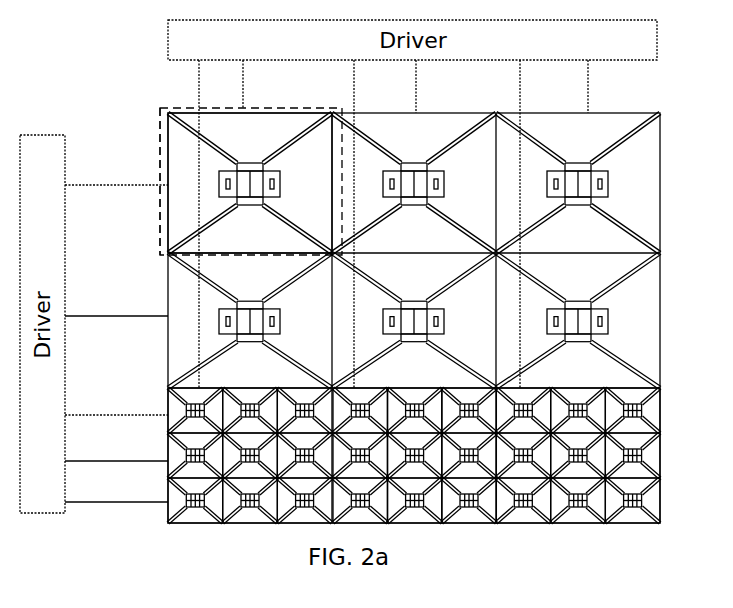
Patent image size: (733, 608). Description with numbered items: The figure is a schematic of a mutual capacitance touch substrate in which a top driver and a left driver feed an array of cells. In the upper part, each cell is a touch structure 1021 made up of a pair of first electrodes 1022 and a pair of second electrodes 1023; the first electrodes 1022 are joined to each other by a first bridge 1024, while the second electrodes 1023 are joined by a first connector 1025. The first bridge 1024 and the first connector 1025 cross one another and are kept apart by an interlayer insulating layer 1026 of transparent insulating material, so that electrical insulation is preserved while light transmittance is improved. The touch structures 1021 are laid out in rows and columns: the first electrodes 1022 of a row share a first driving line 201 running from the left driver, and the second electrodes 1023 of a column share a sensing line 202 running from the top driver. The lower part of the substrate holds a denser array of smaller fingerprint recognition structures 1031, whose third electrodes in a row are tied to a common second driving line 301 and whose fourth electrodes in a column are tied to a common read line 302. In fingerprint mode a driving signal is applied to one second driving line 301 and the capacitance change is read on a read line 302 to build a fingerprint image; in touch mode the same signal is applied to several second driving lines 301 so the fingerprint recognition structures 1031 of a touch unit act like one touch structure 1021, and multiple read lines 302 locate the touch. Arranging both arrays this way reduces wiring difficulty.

The first driving line 201 is at (118, 187).
The sensing line 202 is at (417, 91).
The second driving line 301 is at (122, 417).
The read line 302 is at (521, 100).
The touch structure 1021 is at (252, 108).
The first electrode 1022 is at (163, 164).
The second electrode 1023 is at (291, 113).
The first bridge 1024 is at (281, 185).
The first connector 1025 is at (258, 142).
The interlayer insulating layer 1026 is at (250, 198).
The fingerprint recognition structure 1031 is at (167, 412).